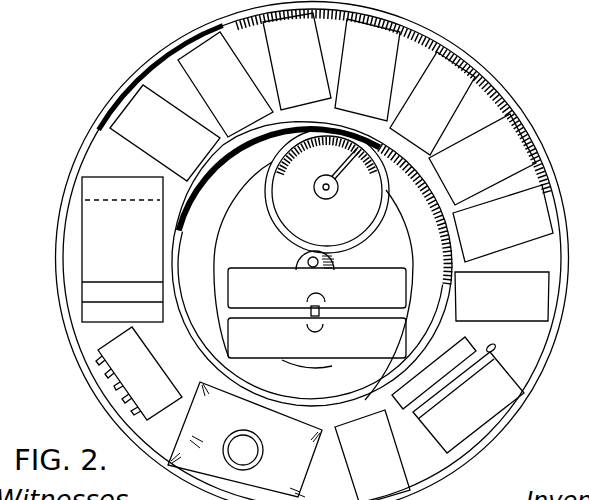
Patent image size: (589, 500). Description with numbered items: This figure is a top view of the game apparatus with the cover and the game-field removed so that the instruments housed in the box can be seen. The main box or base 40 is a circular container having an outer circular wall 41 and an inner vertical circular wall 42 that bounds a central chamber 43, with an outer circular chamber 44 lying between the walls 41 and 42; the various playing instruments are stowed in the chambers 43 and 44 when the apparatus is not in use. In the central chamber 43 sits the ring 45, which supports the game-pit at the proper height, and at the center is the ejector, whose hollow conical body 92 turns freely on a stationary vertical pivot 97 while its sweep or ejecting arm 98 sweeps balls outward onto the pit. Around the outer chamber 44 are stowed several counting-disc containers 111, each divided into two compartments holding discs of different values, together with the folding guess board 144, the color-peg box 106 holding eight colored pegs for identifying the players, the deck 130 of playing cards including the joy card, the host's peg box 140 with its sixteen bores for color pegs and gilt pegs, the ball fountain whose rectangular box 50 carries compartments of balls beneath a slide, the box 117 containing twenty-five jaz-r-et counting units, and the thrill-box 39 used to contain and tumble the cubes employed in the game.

The main box 40 is at (44, 251).
The outer circular wall 41 is at (460, 63).
The inner vertical circular wall 42 is at (195, 340).
The central chamber 43 is at (262, 257).
The outer circular chamber 44 is at (133, 166).
The guess board 144 is at (122, 278).
The container 111 is at (200, 73).
The body 92 is at (306, 236).
The sweep or ejecting arm 98 is at (348, 174).
The vertical pivot 97 is at (334, 258).
The thrill-box 39 is at (392, 301).
The ring 45 is at (325, 394).
The host's peg box 140 is at (420, 368).
The rectangular box 50 is at (492, 373).
The color-peg box 106 is at (139, 373).
The deck of playing cards 130 is at (290, 485).
The box 117 is at (382, 486).